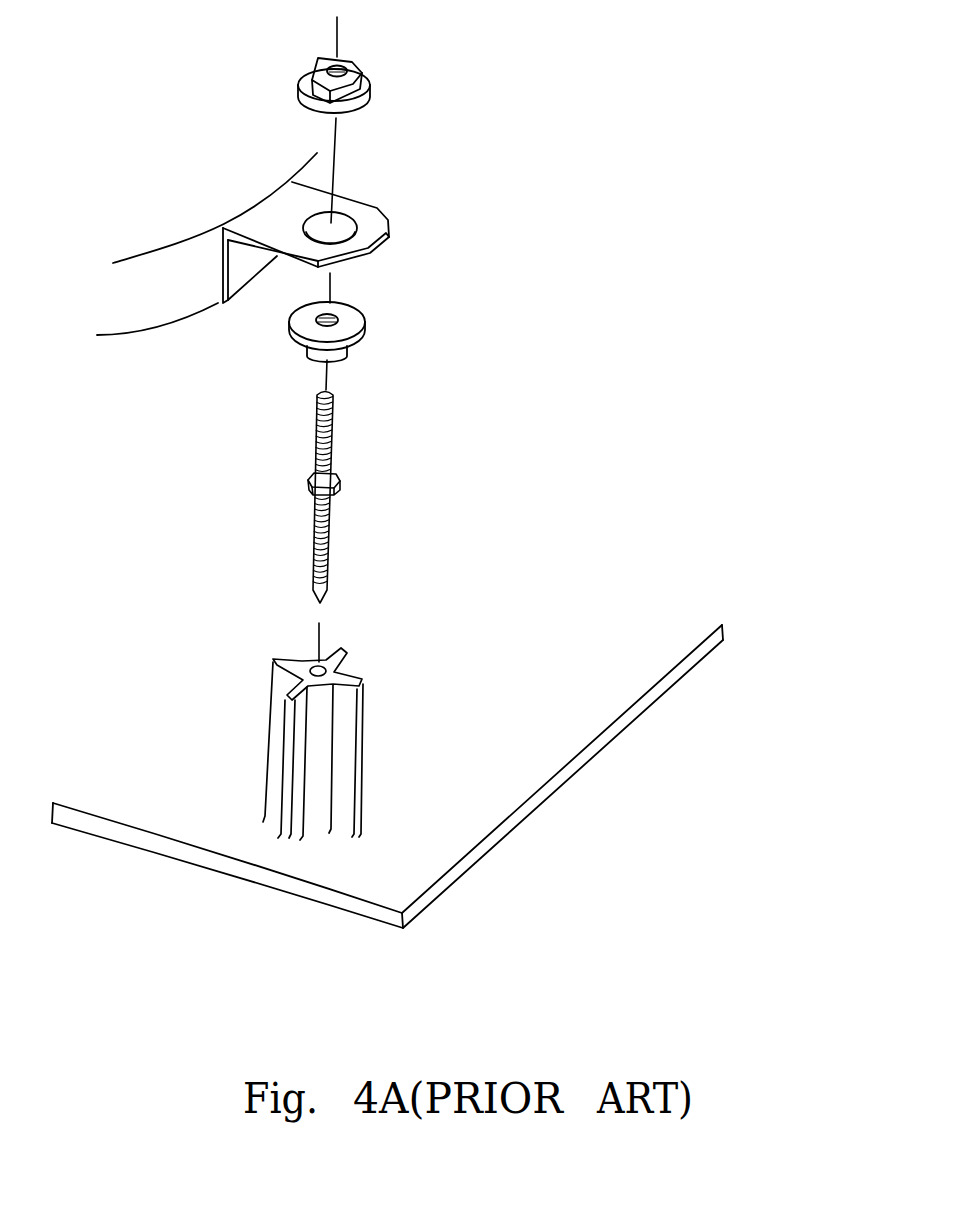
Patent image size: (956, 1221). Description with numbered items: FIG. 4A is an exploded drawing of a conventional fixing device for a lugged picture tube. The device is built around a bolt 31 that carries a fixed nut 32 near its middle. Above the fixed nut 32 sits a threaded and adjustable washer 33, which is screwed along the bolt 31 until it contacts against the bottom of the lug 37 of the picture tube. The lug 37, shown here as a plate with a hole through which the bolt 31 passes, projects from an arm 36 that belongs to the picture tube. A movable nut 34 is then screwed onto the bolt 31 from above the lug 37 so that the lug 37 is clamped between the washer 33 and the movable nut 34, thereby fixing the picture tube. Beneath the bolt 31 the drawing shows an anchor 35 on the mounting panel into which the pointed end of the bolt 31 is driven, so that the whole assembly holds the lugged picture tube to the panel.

The bolt 31 is at (332, 547).
The fixed nut 32 is at (338, 483).
The threaded and adjustable washer 33 is at (347, 323).
The movable nut 34 is at (370, 90).
The anchor plug 35 is at (323, 725).
The support arm 36 is at (160, 305).
The lug 37 is at (388, 219).